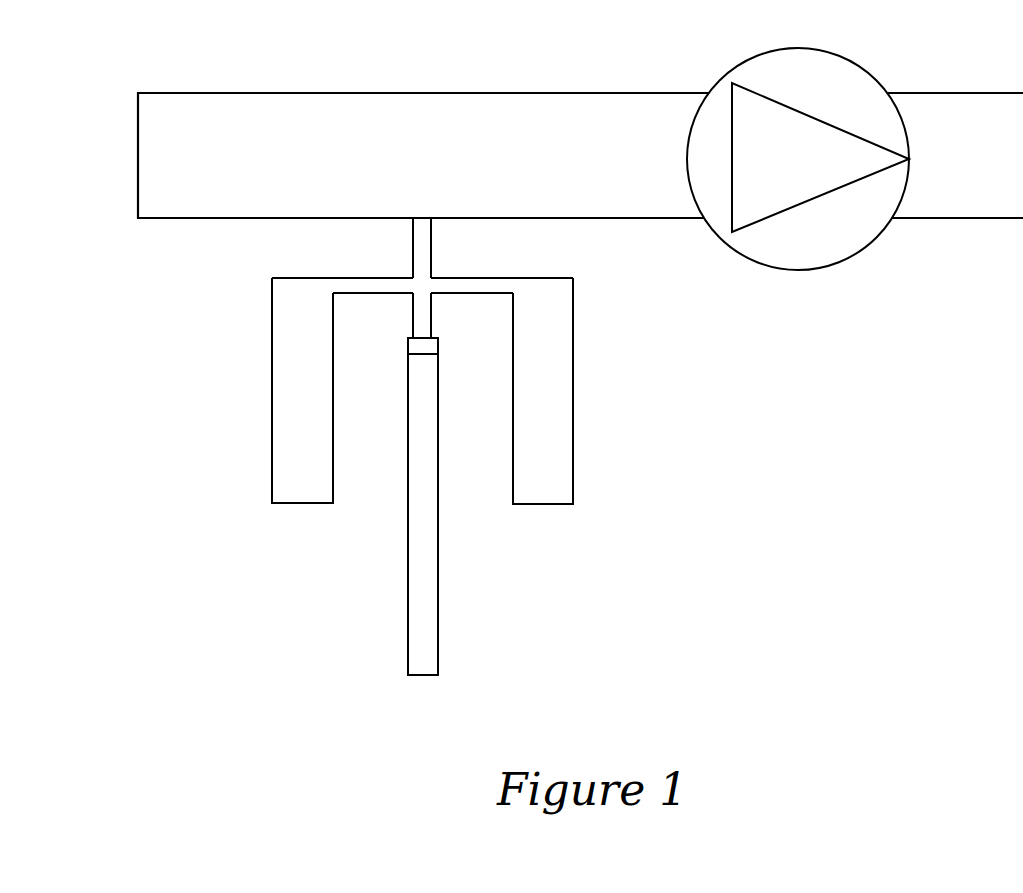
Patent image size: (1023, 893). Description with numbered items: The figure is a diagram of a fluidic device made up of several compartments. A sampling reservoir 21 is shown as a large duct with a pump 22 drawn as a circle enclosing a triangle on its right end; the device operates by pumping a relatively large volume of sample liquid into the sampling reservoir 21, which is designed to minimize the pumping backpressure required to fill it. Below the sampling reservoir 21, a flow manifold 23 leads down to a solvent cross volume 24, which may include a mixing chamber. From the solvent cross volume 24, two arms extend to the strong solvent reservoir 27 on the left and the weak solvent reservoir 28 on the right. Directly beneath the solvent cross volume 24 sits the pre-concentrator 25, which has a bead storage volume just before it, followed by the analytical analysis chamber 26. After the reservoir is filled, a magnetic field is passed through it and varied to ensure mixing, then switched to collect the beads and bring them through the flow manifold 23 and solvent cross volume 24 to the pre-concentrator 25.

The sampling reservoir 21 is at (388, 110).
The pump 22 is at (842, 72).
The flow manifold 23 is at (422, 249).
The solvent cross volume 24 is at (422, 285).
The pre-concentrator 25 is at (430, 347).
The analytical analysis chamber 26 is at (430, 627).
The strong solvent reservoir 27 is at (285, 477).
The weak solvent reservoir 28 is at (563, 477).